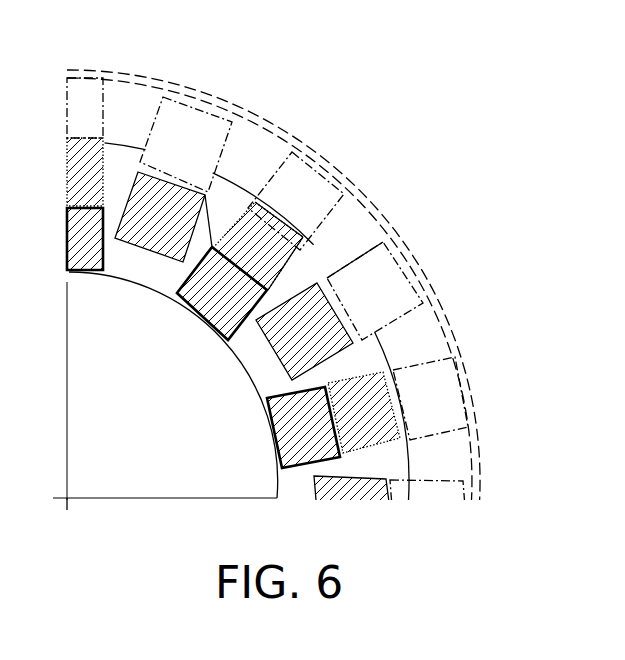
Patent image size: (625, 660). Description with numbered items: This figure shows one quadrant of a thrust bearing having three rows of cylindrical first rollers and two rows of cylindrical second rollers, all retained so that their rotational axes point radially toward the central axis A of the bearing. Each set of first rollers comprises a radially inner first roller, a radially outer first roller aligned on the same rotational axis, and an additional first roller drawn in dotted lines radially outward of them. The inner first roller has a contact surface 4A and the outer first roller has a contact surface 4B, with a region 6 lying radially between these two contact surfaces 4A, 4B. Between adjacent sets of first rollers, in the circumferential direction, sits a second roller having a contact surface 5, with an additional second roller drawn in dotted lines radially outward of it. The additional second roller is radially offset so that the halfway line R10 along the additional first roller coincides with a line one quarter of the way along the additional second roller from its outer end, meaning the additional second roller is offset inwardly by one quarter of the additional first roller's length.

The contact surface 4A is at (222, 308).
The contact surface 4B is at (287, 217).
The contact surface 5 is at (183, 208).
The region 6 is at (363, 235).
The halfway line R10 is at (270, 265).
The central axis A is at (63, 503).